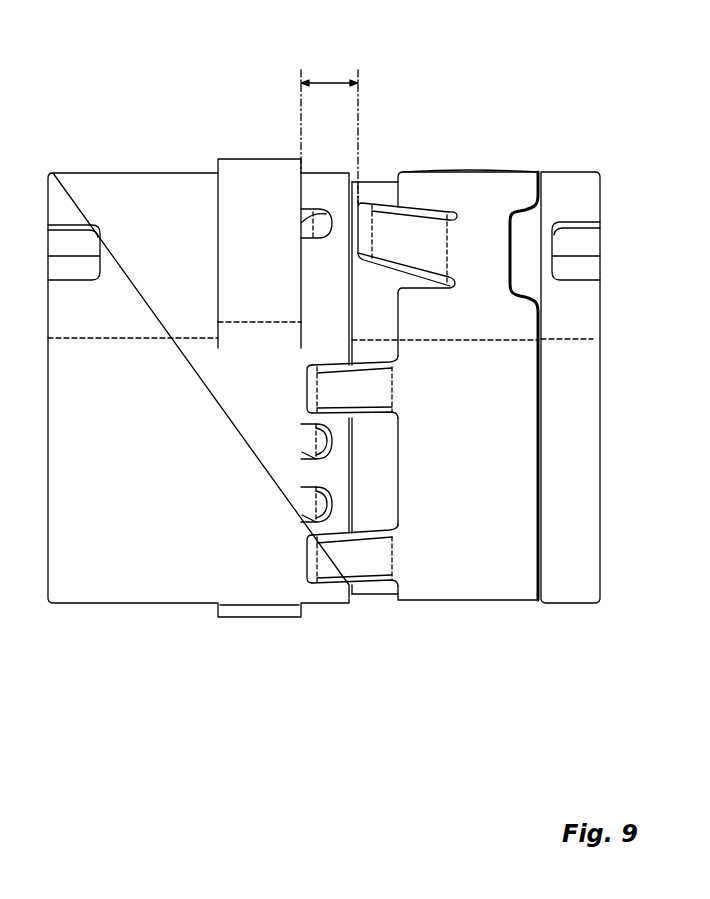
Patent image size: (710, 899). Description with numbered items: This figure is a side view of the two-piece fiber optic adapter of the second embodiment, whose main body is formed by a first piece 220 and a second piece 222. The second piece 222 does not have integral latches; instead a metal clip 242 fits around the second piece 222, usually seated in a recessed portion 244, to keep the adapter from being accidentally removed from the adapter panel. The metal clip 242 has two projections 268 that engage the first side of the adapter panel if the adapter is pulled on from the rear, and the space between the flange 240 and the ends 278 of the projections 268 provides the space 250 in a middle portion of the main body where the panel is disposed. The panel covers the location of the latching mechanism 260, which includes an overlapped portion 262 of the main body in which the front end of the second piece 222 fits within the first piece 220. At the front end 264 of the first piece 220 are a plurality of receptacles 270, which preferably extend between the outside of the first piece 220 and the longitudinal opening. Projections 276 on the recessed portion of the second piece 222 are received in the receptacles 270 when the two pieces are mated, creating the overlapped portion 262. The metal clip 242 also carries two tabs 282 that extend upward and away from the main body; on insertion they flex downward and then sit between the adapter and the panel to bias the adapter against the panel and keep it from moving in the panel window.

The first piece 220 is at (145, 590).
The second piece 222 is at (600, 368).
The flange 240 is at (270, 170).
The metal clip 242 is at (522, 507).
The recessed portion 244 is at (538, 172).
The space 250 is at (335, 82).
The latching mechanism 260 is at (315, 330).
The overlapped portion 262 is at (332, 598).
The front end of the first piece 264 is at (325, 355).
The projections 268 is at (420, 243).
The receptacles 270 is at (303, 215).
The projections 276 is at (322, 233).
The ends of the projections 278 is at (364, 207).
The tabs 282 is at (378, 565).